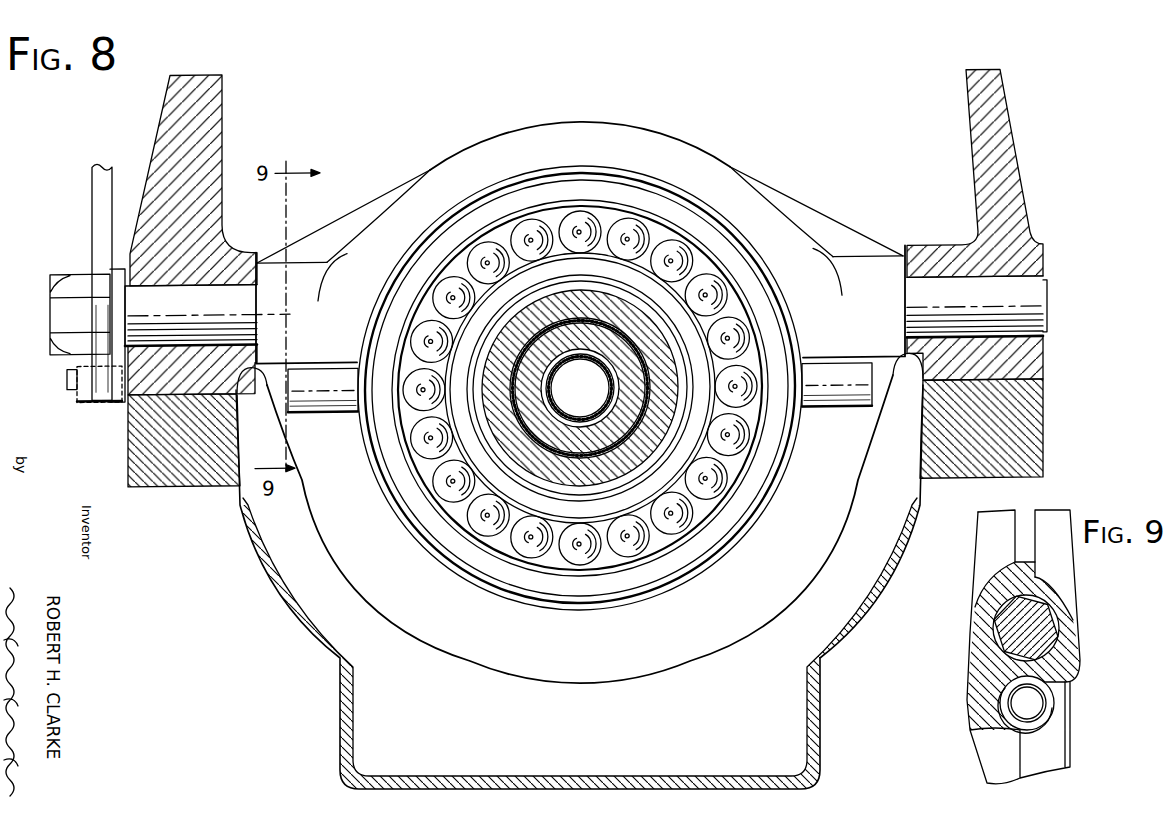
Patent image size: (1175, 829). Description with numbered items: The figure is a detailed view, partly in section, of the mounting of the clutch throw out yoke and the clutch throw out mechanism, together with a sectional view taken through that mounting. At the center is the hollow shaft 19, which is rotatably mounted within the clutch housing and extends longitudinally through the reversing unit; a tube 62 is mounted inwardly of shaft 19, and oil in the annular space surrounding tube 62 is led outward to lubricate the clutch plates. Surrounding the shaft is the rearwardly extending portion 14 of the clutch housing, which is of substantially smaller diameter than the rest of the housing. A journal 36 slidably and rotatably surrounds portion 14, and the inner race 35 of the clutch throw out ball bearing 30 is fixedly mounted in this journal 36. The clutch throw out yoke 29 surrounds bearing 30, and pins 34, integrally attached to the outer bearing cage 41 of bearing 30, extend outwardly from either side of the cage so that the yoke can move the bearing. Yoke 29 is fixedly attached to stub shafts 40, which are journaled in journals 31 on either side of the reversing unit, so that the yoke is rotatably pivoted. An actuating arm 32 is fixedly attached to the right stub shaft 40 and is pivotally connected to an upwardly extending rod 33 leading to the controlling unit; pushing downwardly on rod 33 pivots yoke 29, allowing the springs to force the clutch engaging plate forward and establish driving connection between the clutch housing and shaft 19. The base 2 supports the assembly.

In FIG. 8, the pedestal base 2 is at (342, 737).
In FIG. 8, the rearwardly extending portion of clutch housing 14 is at (607, 480).
In FIG. 8, the hollow shaft 19 is at (578, 430).
In FIG. 8, the clutch throw out yoke 29 is at (668, 140).
In FIG. 9, the clutch throw out yoke 29 is at (977, 574).
In FIG. 8, the clutch throw out ball bearing 30 is at (527, 226).
In FIG. 8, the journals 31 is at (224, 273).
In FIG. 8, the actuating arm 32 is at (85, 272).
In FIG. 8, the rod 33 is at (97, 212).
In FIG. 8, the pins 34 is at (336, 409).
In FIG. 9, the pins 34 is at (1038, 713).
In FIG. 8, the inner race 35 is at (614, 258).
In FIG. 8, the journal 36 is at (568, 284).
In FIG. 8, the stub shafts 40 is at (222, 304).
In FIG. 8, the outer bearing cage 41 is at (403, 335).
In FIG. 8, the tube 62 is at (604, 362).